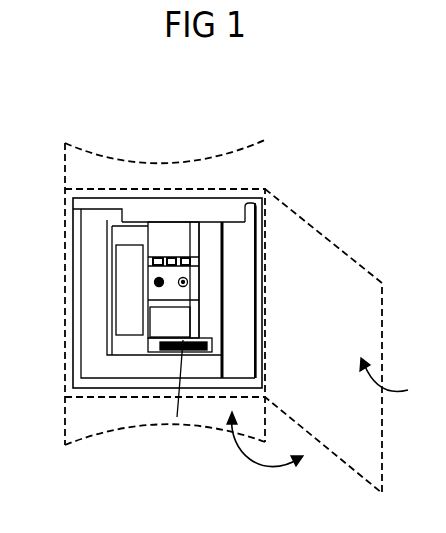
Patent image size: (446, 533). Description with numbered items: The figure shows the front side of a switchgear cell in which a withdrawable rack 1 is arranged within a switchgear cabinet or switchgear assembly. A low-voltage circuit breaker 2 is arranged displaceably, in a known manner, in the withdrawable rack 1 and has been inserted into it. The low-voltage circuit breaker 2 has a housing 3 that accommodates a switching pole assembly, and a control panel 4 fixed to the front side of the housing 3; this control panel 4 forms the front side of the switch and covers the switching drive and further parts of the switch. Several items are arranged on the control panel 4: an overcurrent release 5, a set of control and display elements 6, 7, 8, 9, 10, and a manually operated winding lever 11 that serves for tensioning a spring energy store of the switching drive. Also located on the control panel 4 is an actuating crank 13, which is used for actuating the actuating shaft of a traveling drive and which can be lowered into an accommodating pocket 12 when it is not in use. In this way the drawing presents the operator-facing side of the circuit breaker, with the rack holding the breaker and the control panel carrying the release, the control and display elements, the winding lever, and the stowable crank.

The withdrawable rack 1 is at (73, 344).
The low-voltage circuit breaker 2 is at (126, 235).
The housing 3 is at (238, 246).
The control panel 4 is at (150, 326).
The overcurrent release 5 is at (113, 306).
The control and display element 6 is at (158, 257).
The control and display element 7 is at (169, 257).
The control and display element 8 is at (186, 257).
The control and display element 9 is at (156, 282).
The control and display element 10 is at (188, 282).
The manually operated winding lever 11 is at (195, 318).
The accommodating pocket 12 is at (212, 350).
The actuating crank 13 is at (183, 389).